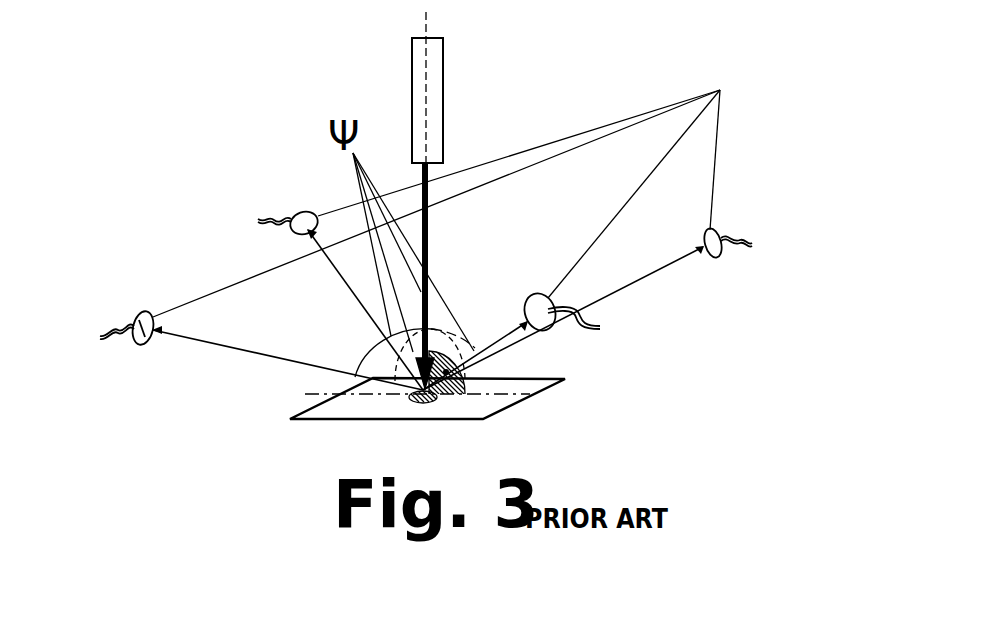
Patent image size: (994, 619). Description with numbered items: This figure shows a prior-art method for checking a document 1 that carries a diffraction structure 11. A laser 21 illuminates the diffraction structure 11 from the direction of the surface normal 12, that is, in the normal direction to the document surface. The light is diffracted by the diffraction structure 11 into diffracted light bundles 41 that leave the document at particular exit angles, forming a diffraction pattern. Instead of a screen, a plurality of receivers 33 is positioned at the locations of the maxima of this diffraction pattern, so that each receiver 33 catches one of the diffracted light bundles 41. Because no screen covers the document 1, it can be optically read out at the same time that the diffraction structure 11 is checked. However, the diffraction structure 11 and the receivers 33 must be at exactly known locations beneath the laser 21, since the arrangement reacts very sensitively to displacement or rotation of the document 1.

The document 1 is at (550, 387).
The diffraction structure 11 is at (413, 396).
The surface normal 12 is at (427, 22).
The laser 21 is at (410, 98).
The receivers 33 is at (461, 176).
The diffracted light bundles 41 is at (260, 353).